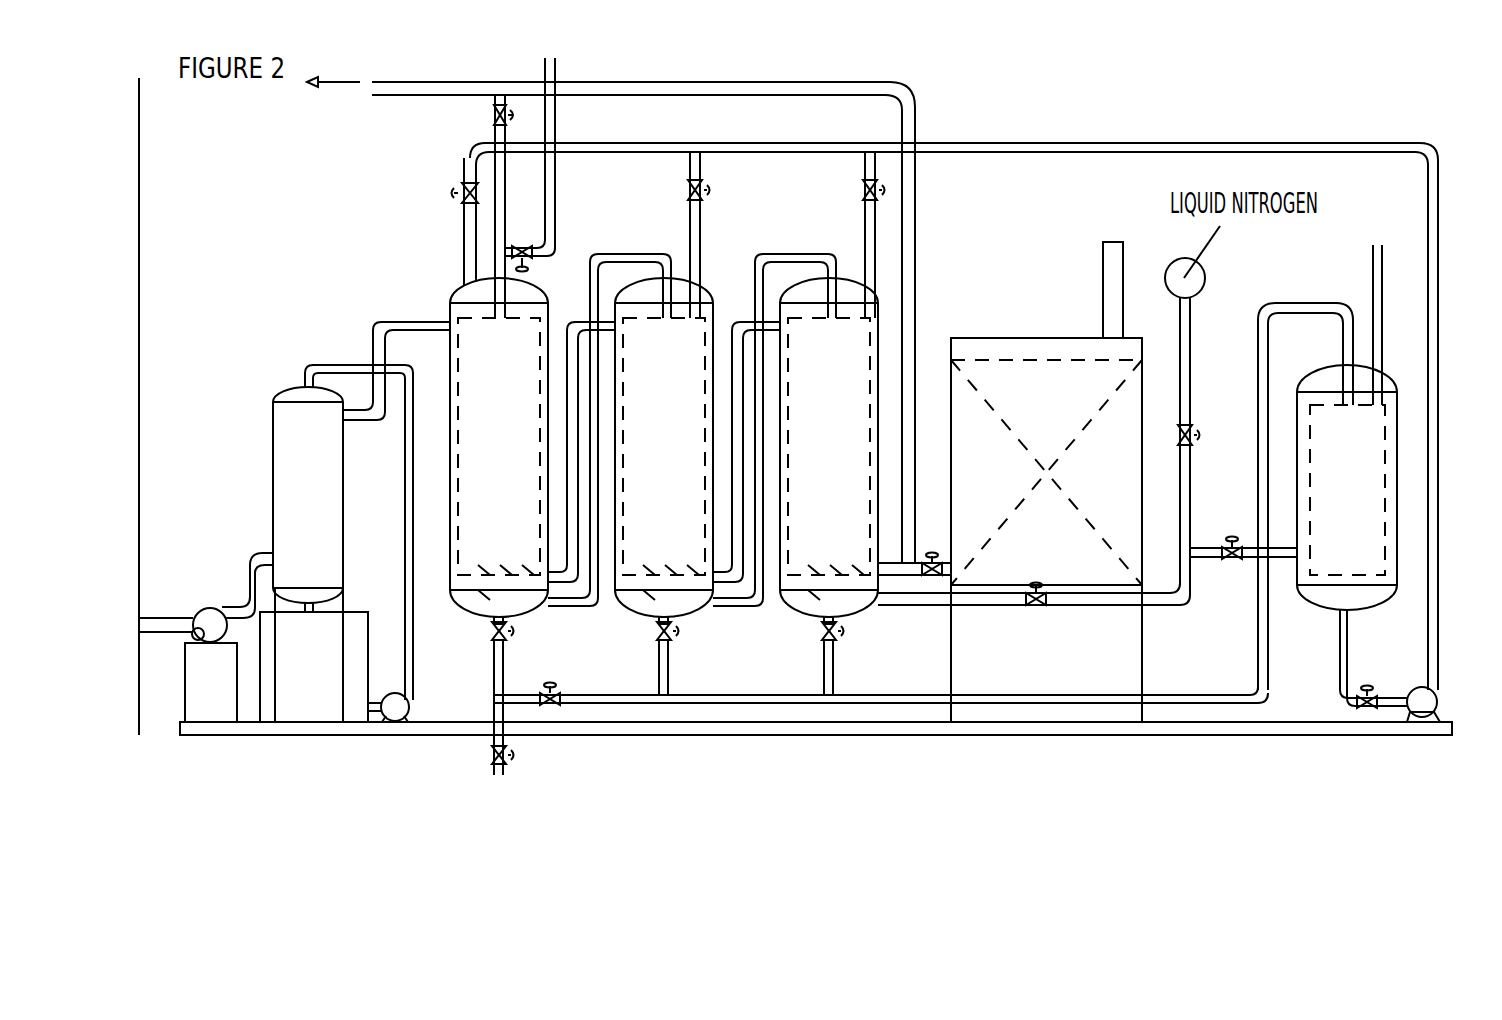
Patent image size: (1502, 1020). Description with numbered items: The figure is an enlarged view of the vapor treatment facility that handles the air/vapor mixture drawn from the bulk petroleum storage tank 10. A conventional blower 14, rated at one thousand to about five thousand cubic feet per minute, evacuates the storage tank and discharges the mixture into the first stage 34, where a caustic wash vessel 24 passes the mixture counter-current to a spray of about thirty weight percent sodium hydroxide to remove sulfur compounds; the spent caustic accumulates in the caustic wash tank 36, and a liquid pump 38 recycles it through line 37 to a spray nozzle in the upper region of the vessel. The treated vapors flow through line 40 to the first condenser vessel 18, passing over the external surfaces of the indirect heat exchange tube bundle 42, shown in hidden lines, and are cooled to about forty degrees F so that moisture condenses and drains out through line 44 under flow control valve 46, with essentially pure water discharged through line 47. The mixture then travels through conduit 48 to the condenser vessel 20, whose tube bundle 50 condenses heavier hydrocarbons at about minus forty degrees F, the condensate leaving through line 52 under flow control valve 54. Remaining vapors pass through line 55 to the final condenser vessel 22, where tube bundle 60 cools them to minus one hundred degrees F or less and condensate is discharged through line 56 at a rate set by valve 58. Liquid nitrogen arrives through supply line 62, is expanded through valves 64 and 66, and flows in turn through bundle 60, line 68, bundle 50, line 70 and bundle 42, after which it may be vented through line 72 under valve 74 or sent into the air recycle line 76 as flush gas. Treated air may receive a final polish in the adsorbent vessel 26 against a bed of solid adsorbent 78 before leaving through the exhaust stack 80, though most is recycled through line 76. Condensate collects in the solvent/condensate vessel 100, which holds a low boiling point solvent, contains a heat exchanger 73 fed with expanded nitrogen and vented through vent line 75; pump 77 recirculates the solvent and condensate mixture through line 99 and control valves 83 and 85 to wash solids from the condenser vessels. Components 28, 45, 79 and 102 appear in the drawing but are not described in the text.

The bulk petroleum storage tank 10 is at (139, 245).
The blower 14 is at (212, 622).
The first condenser vessel 18 is at (451, 440).
The condenser vessel 20 is at (677, 388).
The final condenser vessel 22 is at (872, 388).
The caustic wash vessel 24 is at (280, 440).
The adsorbent vessel 26 is at (1072, 392).
The base plate 28 is at (1146, 730).
The first stage 34 is at (278, 296).
The caustic wash tank 36 is at (306, 690).
The line 37 is at (410, 434).
The liquid pump 38 is at (392, 710).
The line 40 is at (382, 346).
The indirect heat exchange tube bundle 42 is at (495, 452).
The line 44 is at (494, 712).
The drain valve 45 is at (512, 757).
The flow control valve 46 is at (492, 632).
The line 47 is at (556, 703).
The conduit 48 is at (569, 580).
The indirect heat exchange tube bundle 50 is at (675, 356).
The line 52 is at (658, 632).
The flow control valve 54 is at (666, 633).
The line 55 is at (723, 607).
The line 56 is at (840, 633).
The valve 58 is at (850, 704).
The tube bundle 60 is at (852, 352).
The supply line 62 is at (962, 604).
The valve 64 is at (1040, 603).
The valve 66 is at (1233, 562).
The line 68 is at (783, 260).
The line 70 is at (622, 253).
The line 72 is at (556, 68).
The heat exchanger 73 is at (1380, 452).
The valve 74 is at (533, 258).
The vent line 75 is at (1372, 262).
The air recycle line 76 is at (393, 82).
The pump 77 is at (1430, 656).
The solid adsorbent 78 is at (1012, 345).
The outlet valve 79 is at (1338, 694).
The exhaust stack 80 is at (1103, 250).
The valve 83 is at (455, 194).
The control valve 85 is at (490, 115).
The line 99 is at (1436, 372).
The solvent/condensate vessel 100 is at (1330, 366).
The nitrogen supply pipe 102 is at (1192, 548).